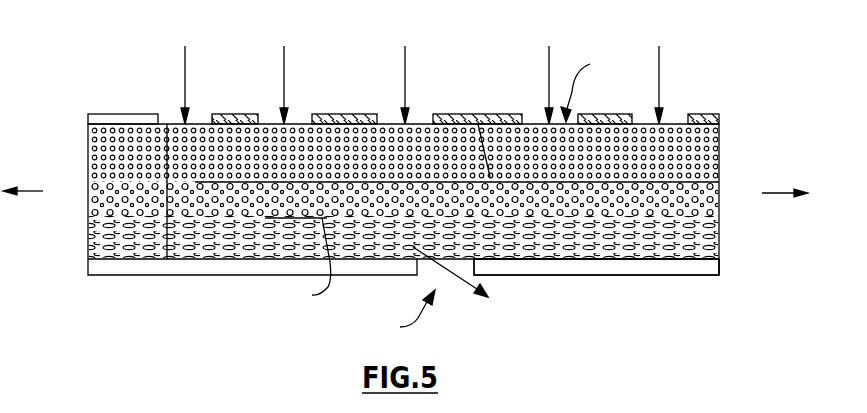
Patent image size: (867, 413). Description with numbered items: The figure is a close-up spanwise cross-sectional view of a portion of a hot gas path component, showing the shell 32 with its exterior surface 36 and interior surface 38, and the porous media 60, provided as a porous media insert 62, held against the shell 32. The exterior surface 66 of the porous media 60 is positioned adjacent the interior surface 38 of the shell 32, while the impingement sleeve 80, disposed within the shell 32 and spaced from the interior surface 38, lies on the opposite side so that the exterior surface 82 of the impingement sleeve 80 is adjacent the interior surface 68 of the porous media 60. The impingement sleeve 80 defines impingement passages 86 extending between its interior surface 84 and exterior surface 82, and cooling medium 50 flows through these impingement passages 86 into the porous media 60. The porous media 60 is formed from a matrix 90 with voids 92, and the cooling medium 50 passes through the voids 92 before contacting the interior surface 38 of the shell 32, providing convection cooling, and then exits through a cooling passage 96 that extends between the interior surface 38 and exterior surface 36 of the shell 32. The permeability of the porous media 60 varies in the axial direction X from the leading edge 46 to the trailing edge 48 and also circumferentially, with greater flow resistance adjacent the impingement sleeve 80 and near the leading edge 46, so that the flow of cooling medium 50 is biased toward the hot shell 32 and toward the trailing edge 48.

The shell 32 is at (717, 275).
The exterior surface 36 is at (645, 275).
The interior surface 38 is at (717, 228).
The leading edge 46 is at (41, 191).
The trailing edge 48 is at (767, 193).
The cooling medium 50 is at (408, 62).
The porous media 60 is at (88, 155).
The porous media insert 62 is at (95, 237).
The exterior surface 66 is at (167, 259).
The interior surface 68 is at (128, 124).
The impingement sleeve 80 is at (330, 122).
The exterior surface 82 is at (478, 124).
The interior surface 84 is at (704, 120).
The impingement passage 86 is at (596, 86).
The matrix 90 is at (633, 248).
The void 92 is at (555, 248).
The cooling passage 96 is at (402, 315).
The axial direction X is at (298, 264).